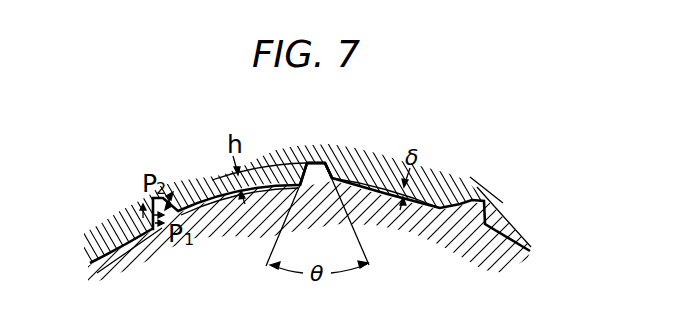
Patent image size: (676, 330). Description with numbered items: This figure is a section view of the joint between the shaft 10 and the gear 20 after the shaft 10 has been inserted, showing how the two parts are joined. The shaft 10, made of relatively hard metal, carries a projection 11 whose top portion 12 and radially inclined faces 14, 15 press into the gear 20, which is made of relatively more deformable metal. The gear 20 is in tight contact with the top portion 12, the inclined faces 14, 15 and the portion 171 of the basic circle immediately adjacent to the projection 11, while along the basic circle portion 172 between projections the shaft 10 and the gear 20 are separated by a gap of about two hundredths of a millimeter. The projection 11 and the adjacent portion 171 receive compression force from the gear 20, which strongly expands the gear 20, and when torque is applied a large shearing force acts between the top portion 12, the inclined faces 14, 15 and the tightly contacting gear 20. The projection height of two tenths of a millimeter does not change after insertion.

The shaft 10 is at (478, 251).
The projection 11 is at (328, 162).
The top portion 12 is at (312, 161).
The inclined face 14 is at (290, 163).
The inclined face 15 is at (338, 174).
The gear 20 is at (446, 184).
The portion of the basic circle adjacent to the projection 171 is at (443, 211).
The basic circle portion between the projections 172 is at (378, 194).